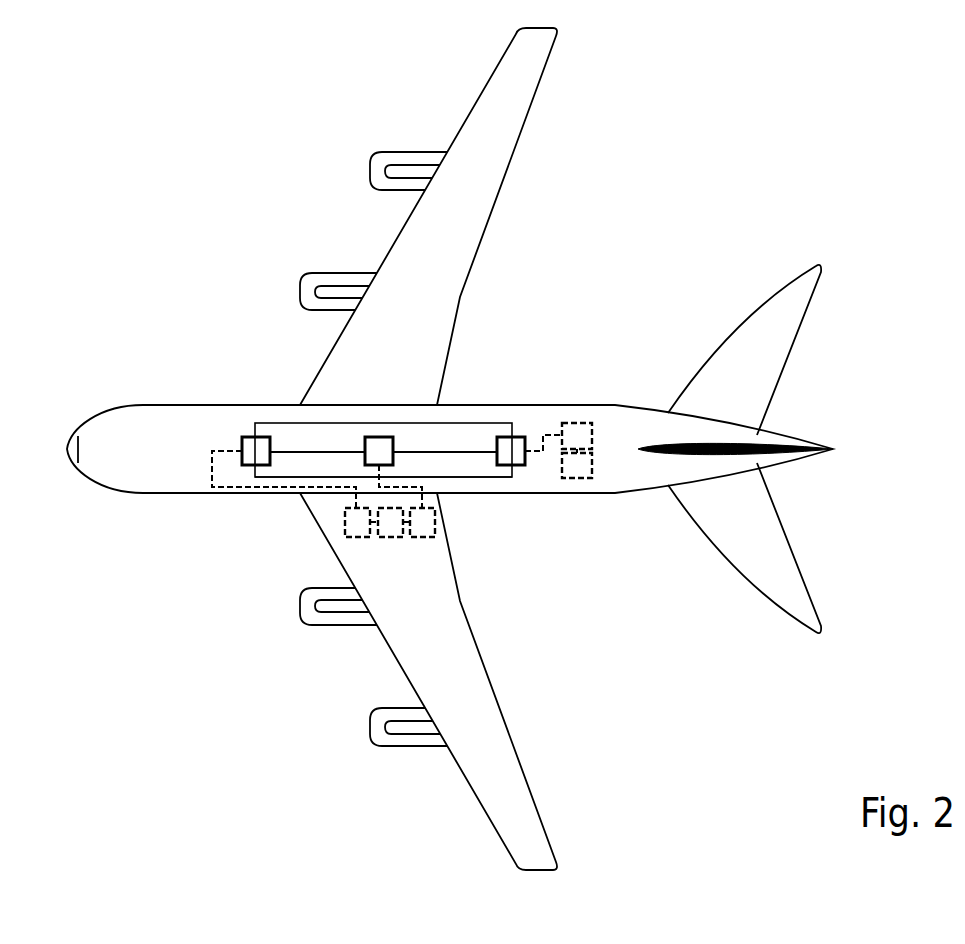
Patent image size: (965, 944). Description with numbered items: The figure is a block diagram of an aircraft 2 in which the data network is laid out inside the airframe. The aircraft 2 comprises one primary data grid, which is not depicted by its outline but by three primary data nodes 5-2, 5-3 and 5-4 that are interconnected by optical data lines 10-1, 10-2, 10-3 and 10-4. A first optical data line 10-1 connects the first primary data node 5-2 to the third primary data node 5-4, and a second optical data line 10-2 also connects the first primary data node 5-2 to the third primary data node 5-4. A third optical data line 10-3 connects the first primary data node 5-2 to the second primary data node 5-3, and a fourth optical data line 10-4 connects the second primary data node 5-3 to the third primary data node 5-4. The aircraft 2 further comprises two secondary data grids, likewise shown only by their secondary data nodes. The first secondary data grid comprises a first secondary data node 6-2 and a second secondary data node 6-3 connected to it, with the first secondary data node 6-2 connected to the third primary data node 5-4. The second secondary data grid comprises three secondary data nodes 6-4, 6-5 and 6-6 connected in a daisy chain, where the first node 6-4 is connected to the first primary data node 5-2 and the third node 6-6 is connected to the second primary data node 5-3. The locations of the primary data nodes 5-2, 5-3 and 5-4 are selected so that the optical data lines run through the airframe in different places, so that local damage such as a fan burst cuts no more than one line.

The aircraft 2 is at (395, 245).
The first primary data node 5-2 is at (240, 438).
The second primary data node 5-3 is at (380, 437).
The third primary data node 5-4 is at (527, 437).
The first optical data line 10-1 is at (300, 422).
The second optical data line 10-2 is at (317, 477).
The third optical data line 10-3 is at (317, 451).
The fourth optical data line 10-4 is at (457, 452).
The first secondary data node 6-2 is at (593, 423).
The second secondary data node 6-3 is at (577, 477).
The first secondary data node of the second secondary data grid 6-4 is at (343, 523).
The second secondary data node of the second secondary data grid 6-5 is at (390, 538).
The third secondary data node of the second secondary data grid 6-6 is at (435, 523).